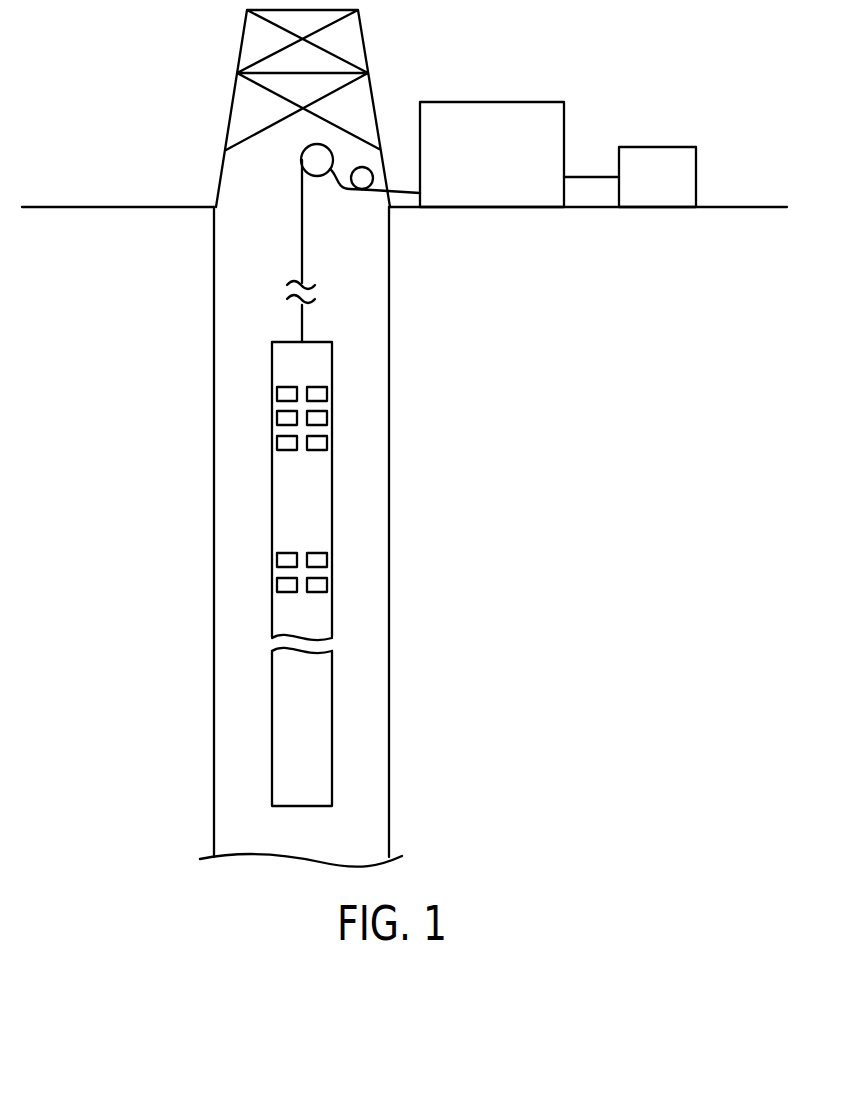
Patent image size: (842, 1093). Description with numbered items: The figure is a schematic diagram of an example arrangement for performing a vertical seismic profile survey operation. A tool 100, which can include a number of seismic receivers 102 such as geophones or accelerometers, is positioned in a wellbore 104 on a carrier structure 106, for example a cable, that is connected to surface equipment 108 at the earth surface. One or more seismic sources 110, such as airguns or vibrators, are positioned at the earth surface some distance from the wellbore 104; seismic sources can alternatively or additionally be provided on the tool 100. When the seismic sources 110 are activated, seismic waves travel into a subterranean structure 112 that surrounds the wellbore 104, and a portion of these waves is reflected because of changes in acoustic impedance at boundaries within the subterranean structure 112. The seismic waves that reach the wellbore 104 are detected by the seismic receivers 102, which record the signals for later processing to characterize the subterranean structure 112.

The tool 100 is at (260, 342).
The seismic receivers 102 is at (327, 393).
The wellbore 104 is at (375, 779).
The carrier structure 106 is at (302, 220).
The surface equipment 108 is at (493, 102).
The seismic sources 110 is at (658, 147).
The subterranean structure 112 is at (642, 531).